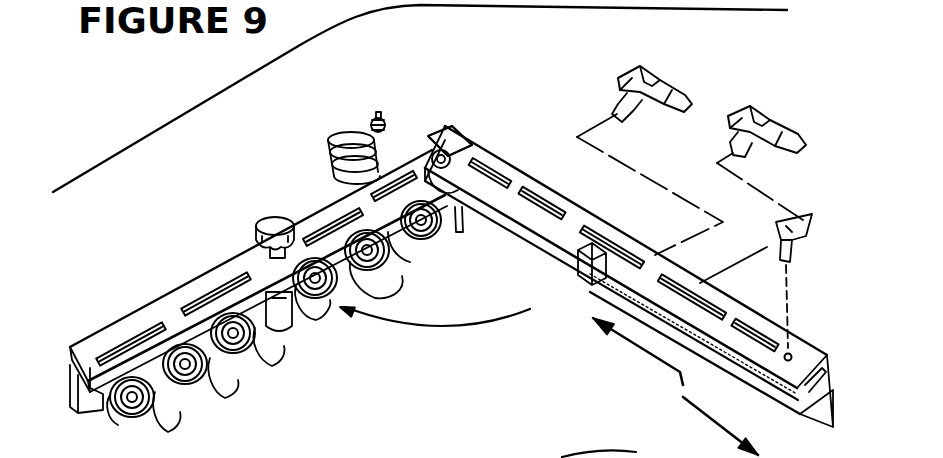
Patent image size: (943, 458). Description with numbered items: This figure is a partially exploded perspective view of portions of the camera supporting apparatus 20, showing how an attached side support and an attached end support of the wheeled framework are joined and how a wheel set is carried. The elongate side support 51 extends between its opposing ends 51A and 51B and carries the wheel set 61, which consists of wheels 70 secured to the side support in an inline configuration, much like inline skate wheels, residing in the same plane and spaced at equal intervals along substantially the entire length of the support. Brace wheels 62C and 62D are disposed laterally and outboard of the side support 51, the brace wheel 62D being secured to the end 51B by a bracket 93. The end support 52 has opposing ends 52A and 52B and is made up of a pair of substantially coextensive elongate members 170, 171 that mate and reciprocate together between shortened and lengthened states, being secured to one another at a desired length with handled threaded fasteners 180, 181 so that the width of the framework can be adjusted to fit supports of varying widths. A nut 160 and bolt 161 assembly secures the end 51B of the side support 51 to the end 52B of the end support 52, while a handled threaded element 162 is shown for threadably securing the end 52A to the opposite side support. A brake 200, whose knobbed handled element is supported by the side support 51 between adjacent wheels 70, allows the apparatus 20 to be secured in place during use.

The camera supporting apparatus 20 is at (520, 168).
The side support 51 is at (227, 258).
The end of side support 51A is at (103, 338).
The end of side support 51B is at (430, 136).
The end support 52 is at (600, 232).
The end of end support 52A is at (810, 357).
The end of end support 52B is at (465, 138).
The wheel set 61 is at (240, 360).
The brace wheel 62C is at (72, 345).
The brace wheel 62D is at (342, 150).
The wheels 70 is at (165, 403).
The bracket 93 is at (398, 122).
The nut 160 is at (470, 220).
The bolt 161 is at (468, 150).
The handled threaded element 162 is at (785, 220).
The elongate member 170 is at (655, 262).
The elongate member 171 is at (550, 270).
The handled threaded fastener 180 is at (768, 113).
The handled threaded fastener 181 is at (668, 70).
The brake 200 is at (272, 222).